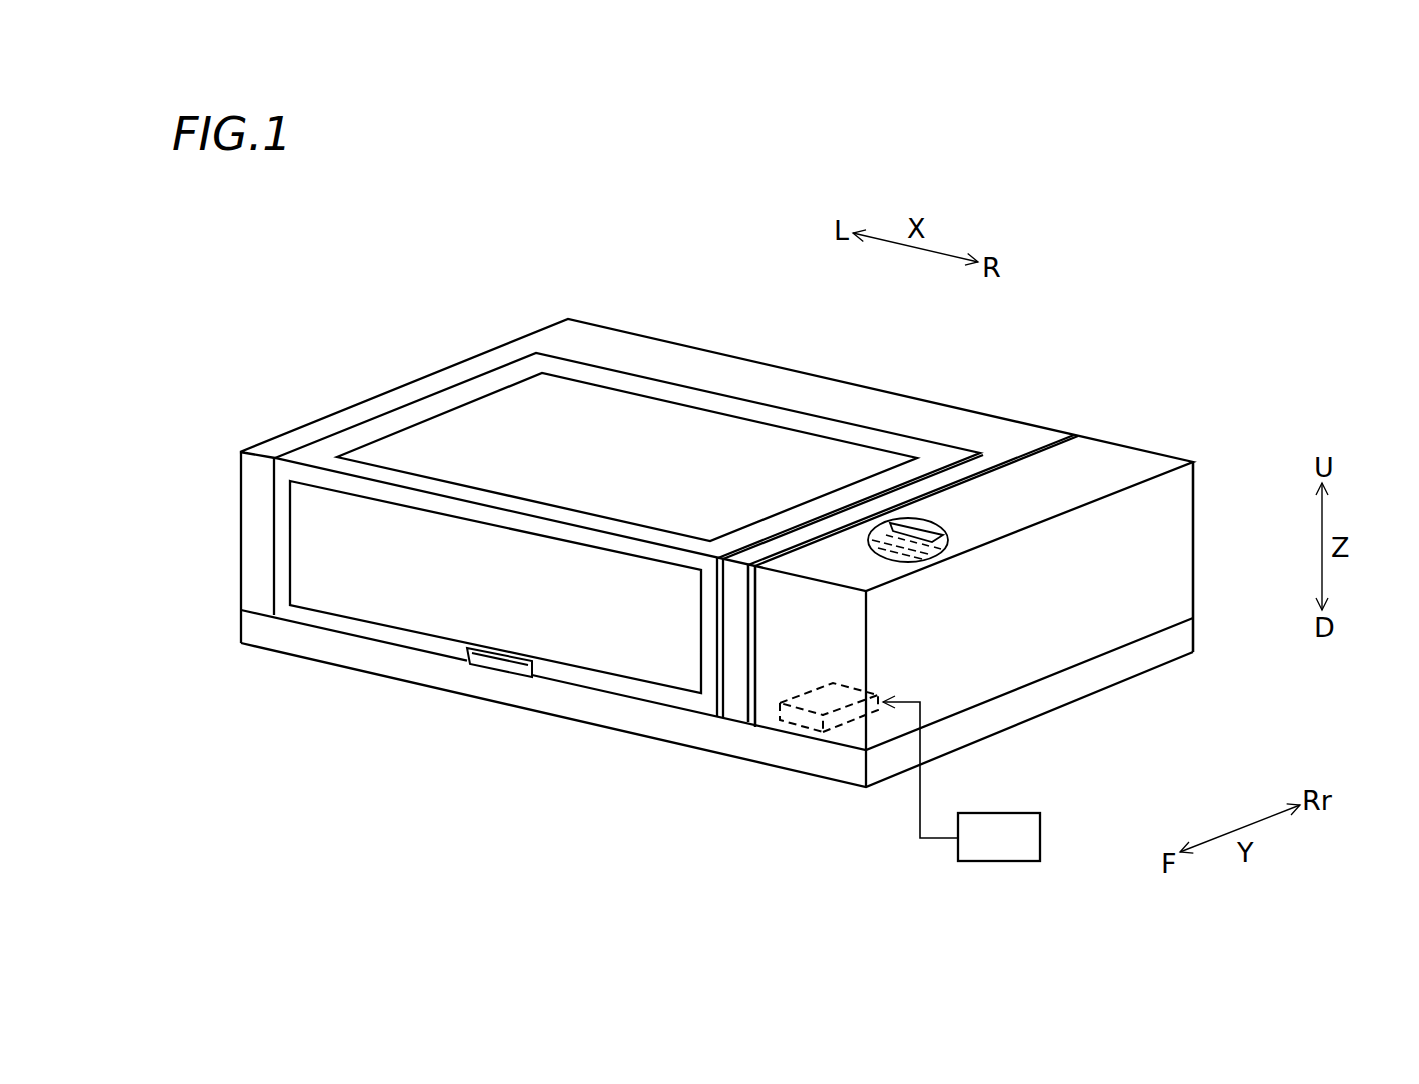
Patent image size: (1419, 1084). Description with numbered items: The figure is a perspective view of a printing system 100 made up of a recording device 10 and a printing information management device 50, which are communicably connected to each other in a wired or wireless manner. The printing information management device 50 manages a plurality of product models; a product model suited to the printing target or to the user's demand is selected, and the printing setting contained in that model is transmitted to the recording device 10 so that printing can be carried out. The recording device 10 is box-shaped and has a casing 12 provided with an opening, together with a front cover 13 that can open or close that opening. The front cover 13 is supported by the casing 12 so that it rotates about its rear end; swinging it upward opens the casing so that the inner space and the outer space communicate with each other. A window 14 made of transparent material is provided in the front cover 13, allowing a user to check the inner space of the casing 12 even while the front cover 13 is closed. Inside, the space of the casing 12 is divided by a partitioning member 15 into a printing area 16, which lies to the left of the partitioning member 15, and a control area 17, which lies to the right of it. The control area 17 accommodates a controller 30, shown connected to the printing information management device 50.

The printing system 100 is at (1172, 371).
The recording device 10 is at (1015, 400).
The casing 12 is at (1197, 577).
The front cover 13 is at (282, 539).
The window 14 is at (493, 466).
The partitioning member 15 is at (755, 723).
The printing area 16 is at (503, 687).
The control area 17 is at (800, 753).
The controller 30 is at (840, 727).
The printing information management device 50 is at (1040, 831).